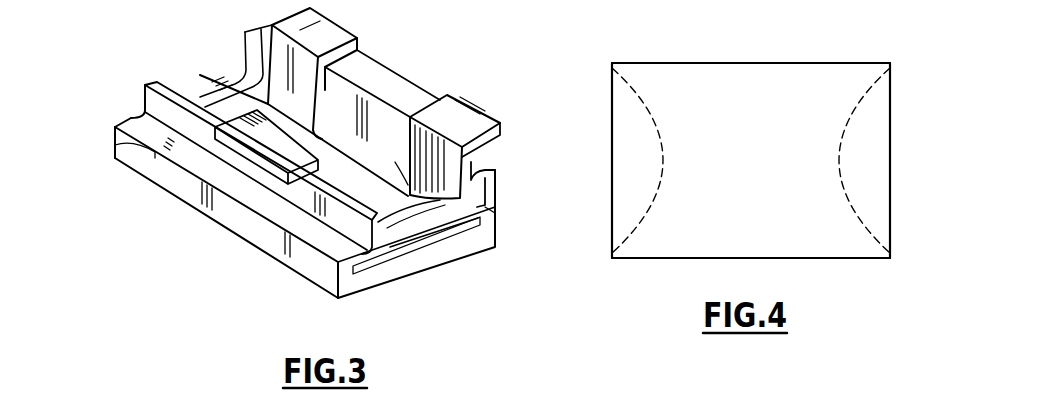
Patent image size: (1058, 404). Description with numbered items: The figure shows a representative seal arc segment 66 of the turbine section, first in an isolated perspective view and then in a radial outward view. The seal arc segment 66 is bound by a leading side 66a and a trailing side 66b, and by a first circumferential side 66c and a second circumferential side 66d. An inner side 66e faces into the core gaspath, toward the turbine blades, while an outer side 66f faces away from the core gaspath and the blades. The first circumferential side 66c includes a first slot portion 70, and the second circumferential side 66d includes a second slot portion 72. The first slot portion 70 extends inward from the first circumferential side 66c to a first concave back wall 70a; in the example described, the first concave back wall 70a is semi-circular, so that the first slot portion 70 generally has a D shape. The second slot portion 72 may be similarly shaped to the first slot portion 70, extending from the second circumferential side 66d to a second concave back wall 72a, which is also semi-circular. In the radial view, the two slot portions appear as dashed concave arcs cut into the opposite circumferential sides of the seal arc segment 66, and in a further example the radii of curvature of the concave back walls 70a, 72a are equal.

In FIG. 3, the seal arc segment 66 is at (307, 176).
In FIG. 4, the seal arc segment 66 is at (743, 154).
In FIG. 3, the leading side 66a is at (307, 263).
In FIG. 4, the leading side 66a is at (655, 258).
In FIG. 3, the trailing side 66b is at (495, 210).
In FIG. 4, the trailing side 66b is at (665, 63).
In FIG. 3, the first circumferential side 66c is at (366, 287).
In FIG. 4, the first circumferential side 66c is at (892, 238).
In FIG. 3, the second circumferential side 66d is at (115, 133).
In FIG. 4, the second circumferential side 66d is at (612, 78).
In FIG. 3, the inner side 66e is at (443, 263).
In FIG. 3, the outer side 66f is at (373, 170).
In FIG. 3, the first slot portion 70 is at (399, 256).
In FIG. 4, the first slot portion 70 is at (870, 157).
In FIG. 4, the first concave back wall 70a is at (856, 125).
In FIG. 3, the second slot portion 72 is at (132, 162).
In FIG. 4, the second slot portion 72 is at (641, 153).
In FIG. 4, the second concave back wall 72a is at (658, 178).